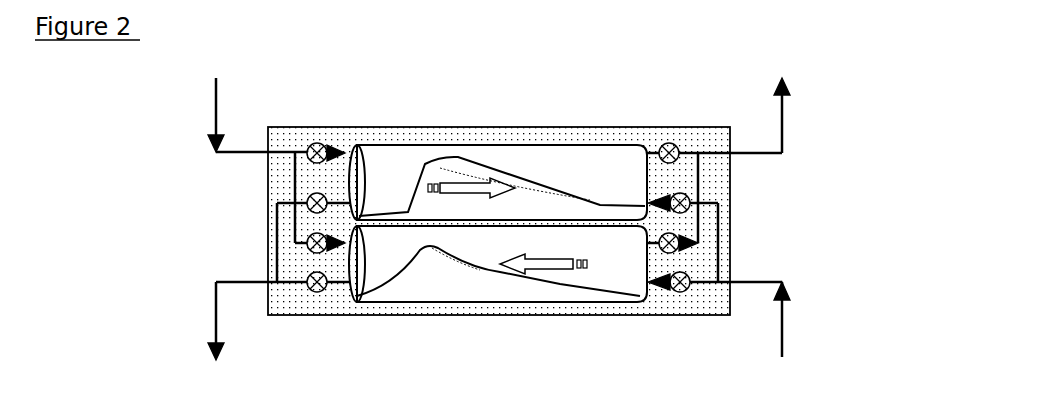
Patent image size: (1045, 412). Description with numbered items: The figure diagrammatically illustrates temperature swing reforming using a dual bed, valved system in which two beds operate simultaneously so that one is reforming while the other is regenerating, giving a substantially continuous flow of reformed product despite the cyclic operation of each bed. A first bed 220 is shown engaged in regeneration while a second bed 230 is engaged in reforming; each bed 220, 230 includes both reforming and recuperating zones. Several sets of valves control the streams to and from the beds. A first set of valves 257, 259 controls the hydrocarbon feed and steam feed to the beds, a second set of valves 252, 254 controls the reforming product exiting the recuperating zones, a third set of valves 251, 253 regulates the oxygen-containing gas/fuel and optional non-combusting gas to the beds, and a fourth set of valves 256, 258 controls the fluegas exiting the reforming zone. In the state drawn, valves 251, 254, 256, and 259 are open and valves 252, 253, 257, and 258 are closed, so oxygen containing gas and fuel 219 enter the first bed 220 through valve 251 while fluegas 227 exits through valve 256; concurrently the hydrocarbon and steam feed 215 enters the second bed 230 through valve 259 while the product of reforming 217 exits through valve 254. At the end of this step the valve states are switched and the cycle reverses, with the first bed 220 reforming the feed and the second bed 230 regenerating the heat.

The hydrocarbon and steam feed 215 is at (784, 305).
The product of reforming 217 is at (212, 297).
The oxygen containing gas and fuel 219 is at (214, 126).
The first bed 220 is at (540, 163).
The fluegas 227 is at (784, 138).
The second bed 230 is at (464, 280).
The valve 251 is at (268, 158).
The valve 252 is at (268, 203).
The valve 253 is at (268, 246).
The valve 254 is at (268, 272).
The valve 256 is at (731, 155).
The valve 257 is at (731, 208).
The valve 258 is at (731, 234).
The valve 259 is at (731, 272).